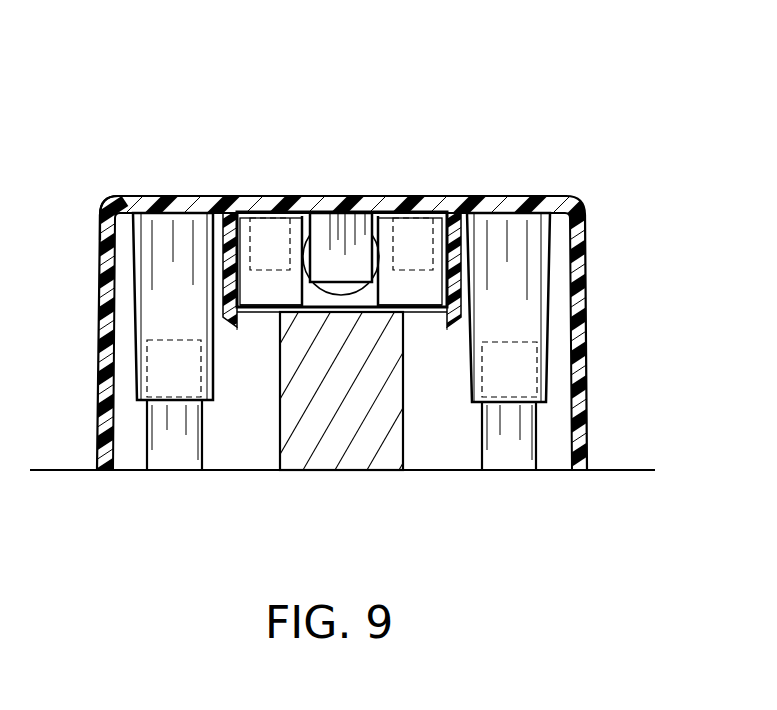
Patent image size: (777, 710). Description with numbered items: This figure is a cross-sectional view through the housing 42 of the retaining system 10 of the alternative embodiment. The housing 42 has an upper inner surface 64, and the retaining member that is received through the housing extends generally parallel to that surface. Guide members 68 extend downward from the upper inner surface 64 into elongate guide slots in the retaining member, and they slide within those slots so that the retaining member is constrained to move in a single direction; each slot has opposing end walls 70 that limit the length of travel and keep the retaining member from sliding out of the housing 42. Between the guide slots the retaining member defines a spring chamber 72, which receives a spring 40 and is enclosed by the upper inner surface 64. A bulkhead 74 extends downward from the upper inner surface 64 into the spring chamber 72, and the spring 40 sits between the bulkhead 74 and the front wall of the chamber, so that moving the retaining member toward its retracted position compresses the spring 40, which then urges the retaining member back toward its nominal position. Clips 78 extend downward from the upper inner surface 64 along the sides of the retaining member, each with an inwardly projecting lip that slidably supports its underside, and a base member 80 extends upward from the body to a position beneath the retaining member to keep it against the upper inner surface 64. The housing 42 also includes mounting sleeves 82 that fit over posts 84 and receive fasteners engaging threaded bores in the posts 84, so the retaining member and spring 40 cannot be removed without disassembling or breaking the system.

The toy assembly 10 is at (536, 84).
The housing 42 is at (597, 353).
The upper inner surface 64 is at (112, 221).
The mounting sleeves 82 is at (147, 277).
The posts 84 is at (170, 463).
The spring 40 is at (305, 299).
The guide members 68 is at (267, 205).
The spring chamber 72 is at (401, 305).
The bulkhead 74 is at (357, 206).
The end walls 70 is at (253, 288).
The clips 78 is at (224, 328).
The base member 80 is at (322, 465).